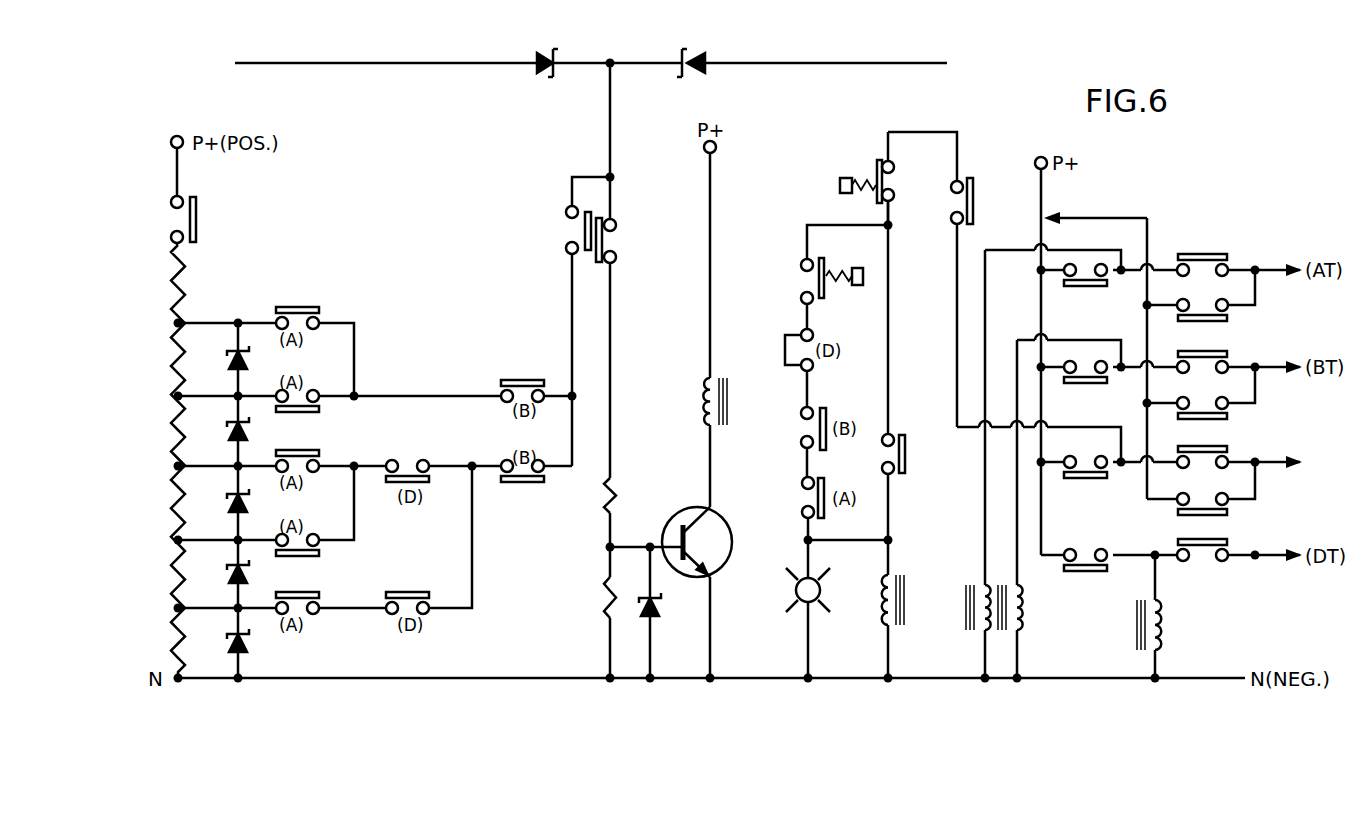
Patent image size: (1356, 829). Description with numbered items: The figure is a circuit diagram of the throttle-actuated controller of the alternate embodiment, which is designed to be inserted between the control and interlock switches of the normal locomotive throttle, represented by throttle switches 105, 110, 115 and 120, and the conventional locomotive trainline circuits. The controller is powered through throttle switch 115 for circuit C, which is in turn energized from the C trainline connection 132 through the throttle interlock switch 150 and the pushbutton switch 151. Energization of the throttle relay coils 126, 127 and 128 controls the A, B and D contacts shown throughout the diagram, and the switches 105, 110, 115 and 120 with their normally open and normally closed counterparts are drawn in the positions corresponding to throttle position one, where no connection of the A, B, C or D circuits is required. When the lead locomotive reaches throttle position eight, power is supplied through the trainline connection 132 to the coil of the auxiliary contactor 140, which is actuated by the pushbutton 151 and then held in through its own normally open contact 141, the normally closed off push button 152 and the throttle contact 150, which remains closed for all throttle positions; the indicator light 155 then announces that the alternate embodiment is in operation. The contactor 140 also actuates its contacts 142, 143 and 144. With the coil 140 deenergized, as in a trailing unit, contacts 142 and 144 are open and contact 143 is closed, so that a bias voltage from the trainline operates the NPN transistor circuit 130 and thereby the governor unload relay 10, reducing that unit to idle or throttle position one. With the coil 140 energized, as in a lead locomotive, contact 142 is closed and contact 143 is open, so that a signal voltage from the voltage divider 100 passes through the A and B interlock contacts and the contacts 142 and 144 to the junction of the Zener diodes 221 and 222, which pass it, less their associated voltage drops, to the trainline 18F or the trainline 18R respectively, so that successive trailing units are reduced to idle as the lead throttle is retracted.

The forward trainline 18F is at (363, 64).
The reverse trainline 18R is at (848, 64).
The Zener diode 221 is at (546, 50).
The Zener diode 222 is at (687, 50).
The TLR contact 142 is at (557, 211).
The TLR contact 143 is at (619, 226).
The TLR contact 144 is at (212, 238).
The voltage divider 100 is at (172, 402).
The governor unload relay 10 is at (698, 392).
The NPN transistor circuit 130 is at (757, 528).
The indicator light 155 is at (792, 591).
The auxiliary contactor 140 is at (875, 606).
The normally open contact 141 is at (914, 460).
The throttle interlock switch 150 is at (973, 172).
The pushbutton switch 151 is at (797, 286).
The off push button 152 is at (858, 166).
The throttle relay coil A 126 is at (978, 592).
The throttle relay coil B 127 is at (1022, 605).
The throttle relay coil D 128 is at (1165, 628).
The throttle switch A 105 is at (1170, 287).
The throttle switch B 110 is at (1170, 385).
The throttle switch C 115 is at (1170, 481).
The throttle switch D 120 is at (1171, 571).
The C trainline connection 132 is at (1325, 474).